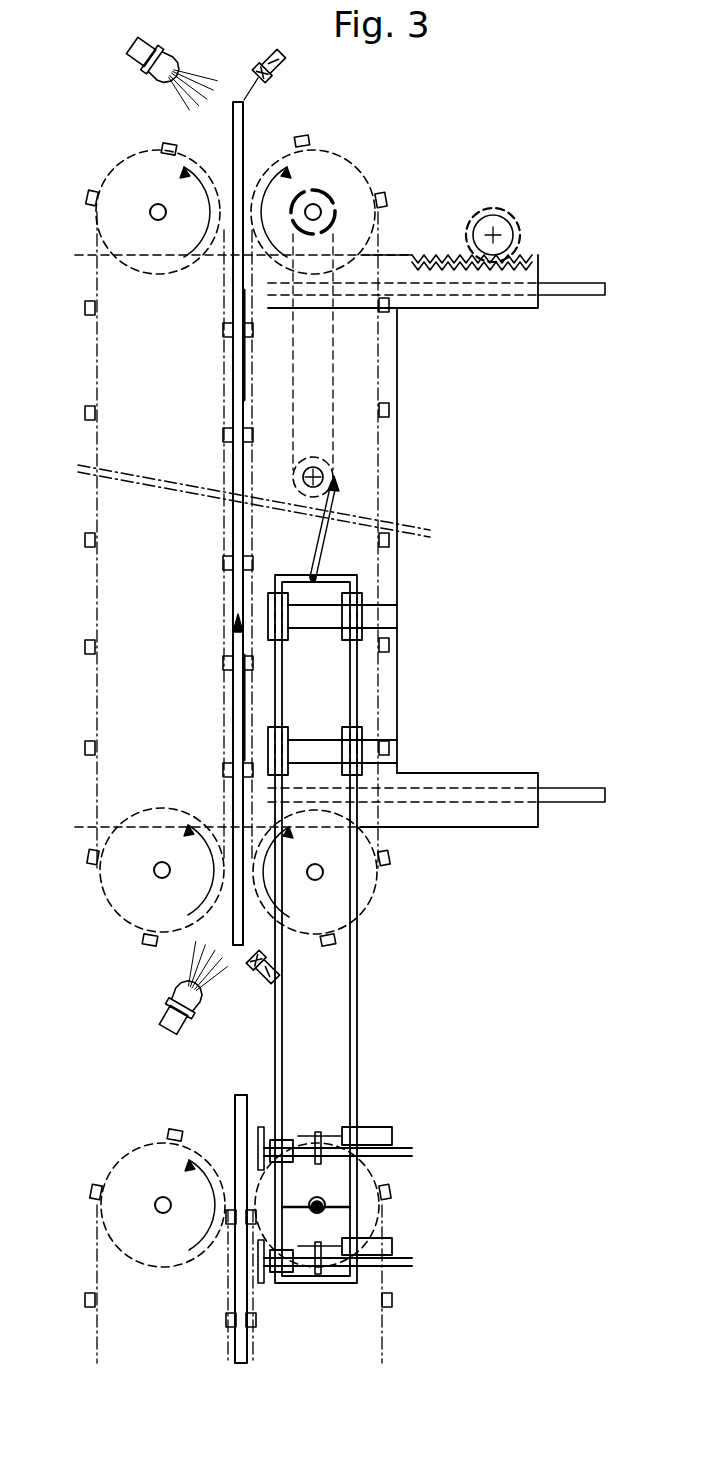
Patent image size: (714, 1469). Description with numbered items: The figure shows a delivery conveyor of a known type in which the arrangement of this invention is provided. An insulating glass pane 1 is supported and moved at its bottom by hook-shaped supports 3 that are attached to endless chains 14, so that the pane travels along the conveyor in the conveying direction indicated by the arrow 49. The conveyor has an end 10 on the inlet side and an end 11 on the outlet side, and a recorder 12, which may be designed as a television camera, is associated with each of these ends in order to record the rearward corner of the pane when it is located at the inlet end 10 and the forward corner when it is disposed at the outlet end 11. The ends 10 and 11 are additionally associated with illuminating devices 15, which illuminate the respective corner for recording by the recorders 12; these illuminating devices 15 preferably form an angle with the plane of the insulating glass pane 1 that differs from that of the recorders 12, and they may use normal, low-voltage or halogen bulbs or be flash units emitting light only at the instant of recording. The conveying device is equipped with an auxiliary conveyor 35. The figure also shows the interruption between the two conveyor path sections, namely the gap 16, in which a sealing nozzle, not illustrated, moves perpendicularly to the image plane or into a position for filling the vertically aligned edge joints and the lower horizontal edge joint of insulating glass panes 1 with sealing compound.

The insulating glass pane 1 is at (236, 150).
The hook-shaped supports 3 is at (87, 547).
The end on the inlet side 10 is at (240, 955).
The end on the outlet side 11 is at (175, 121).
The recorder 12 is at (270, 50).
The endless chains 14 is at (97, 440).
The illuminating devices 15 is at (148, 52).
The gap 16 is at (200, 1047).
The auxiliary conveyor 35 is at (405, 1177).
The conveying direction arrow 49 is at (150, 590).